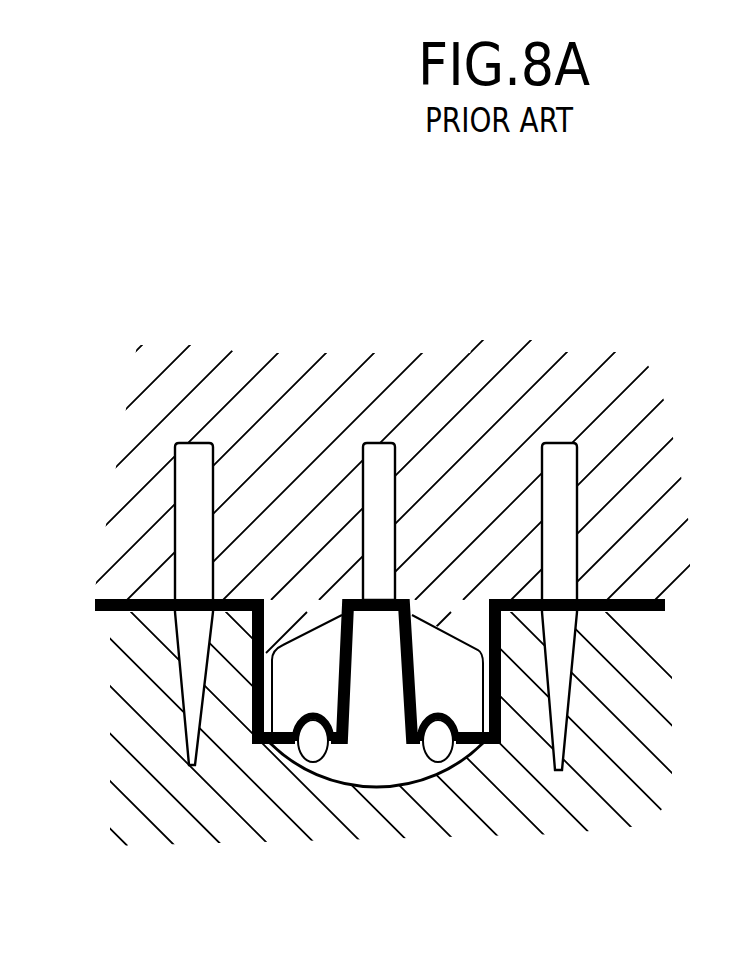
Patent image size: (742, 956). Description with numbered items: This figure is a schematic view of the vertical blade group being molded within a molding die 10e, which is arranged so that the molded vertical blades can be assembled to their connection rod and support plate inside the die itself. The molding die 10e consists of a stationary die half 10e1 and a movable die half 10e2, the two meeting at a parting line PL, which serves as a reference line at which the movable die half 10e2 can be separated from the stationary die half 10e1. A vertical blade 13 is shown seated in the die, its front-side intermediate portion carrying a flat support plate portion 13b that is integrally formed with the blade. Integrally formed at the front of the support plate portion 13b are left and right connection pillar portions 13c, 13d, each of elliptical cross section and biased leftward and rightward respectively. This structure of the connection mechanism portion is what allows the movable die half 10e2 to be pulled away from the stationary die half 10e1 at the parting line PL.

The molding die 10e is at (371, 547).
The stationary die half 10e1 is at (617, 864).
The movable die half 10e2 is at (368, 348).
The vertical blade 13 is at (403, 451).
The lower flat support plate portion 13b is at (380, 778).
The left connection pillar portion 13c is at (312, 755).
The right connection pillar portion 13d is at (440, 753).
The parting line PL is at (653, 601).